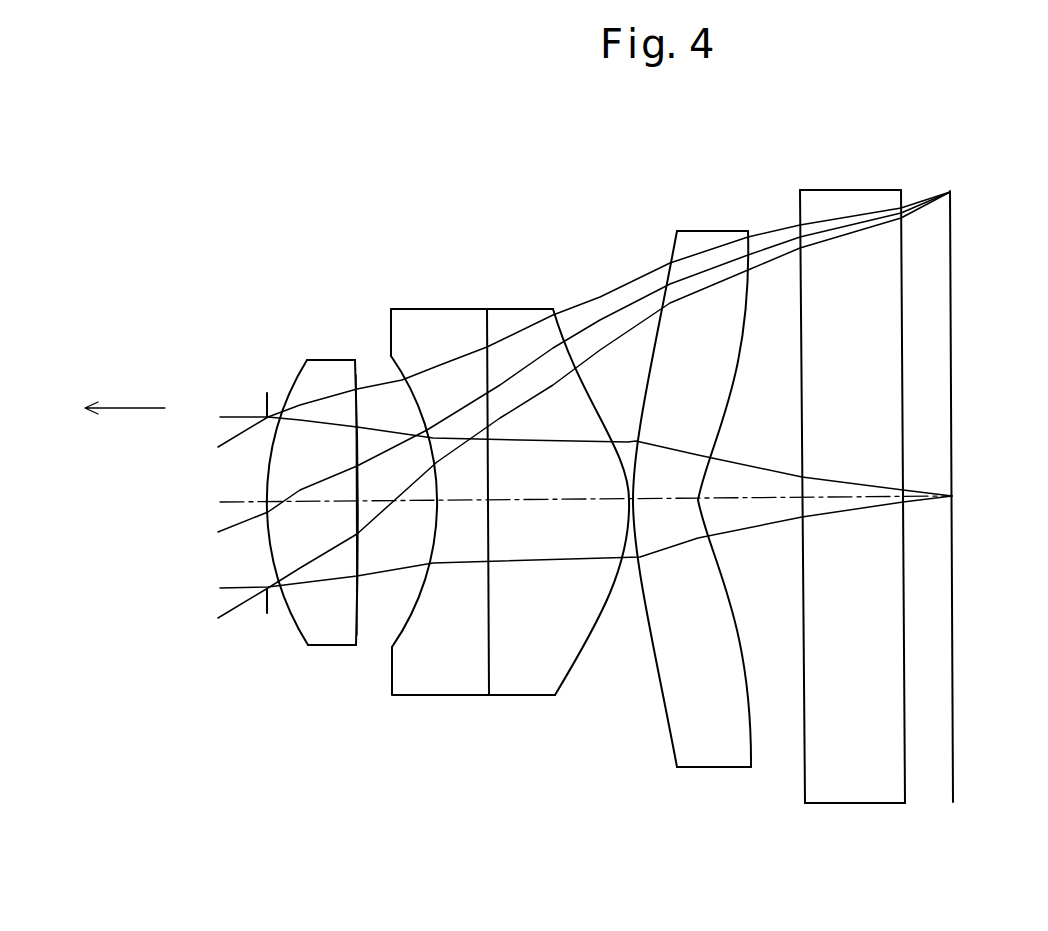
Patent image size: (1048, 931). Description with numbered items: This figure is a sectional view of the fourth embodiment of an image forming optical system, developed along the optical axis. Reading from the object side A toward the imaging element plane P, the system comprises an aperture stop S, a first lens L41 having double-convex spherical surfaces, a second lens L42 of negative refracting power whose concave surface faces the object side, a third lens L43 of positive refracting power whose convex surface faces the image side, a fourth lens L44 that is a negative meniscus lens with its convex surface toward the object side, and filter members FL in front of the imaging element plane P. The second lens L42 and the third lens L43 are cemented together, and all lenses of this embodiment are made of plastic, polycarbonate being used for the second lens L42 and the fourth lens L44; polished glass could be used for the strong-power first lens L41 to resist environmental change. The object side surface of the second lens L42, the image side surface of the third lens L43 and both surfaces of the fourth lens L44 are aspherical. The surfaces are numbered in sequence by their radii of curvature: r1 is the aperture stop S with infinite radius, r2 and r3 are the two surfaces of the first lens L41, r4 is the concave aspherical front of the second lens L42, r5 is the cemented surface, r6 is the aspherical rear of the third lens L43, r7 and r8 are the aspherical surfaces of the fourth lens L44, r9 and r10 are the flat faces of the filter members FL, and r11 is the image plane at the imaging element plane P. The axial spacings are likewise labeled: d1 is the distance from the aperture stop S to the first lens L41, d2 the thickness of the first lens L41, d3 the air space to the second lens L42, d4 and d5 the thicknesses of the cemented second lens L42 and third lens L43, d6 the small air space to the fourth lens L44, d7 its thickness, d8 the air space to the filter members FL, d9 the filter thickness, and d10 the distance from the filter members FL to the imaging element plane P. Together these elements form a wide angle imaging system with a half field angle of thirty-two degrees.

The object side A is at (125, 393).
The aperture stop S is at (268, 613).
The first lens L41 is at (294, 545).
The second lens L42 is at (427, 540).
The third lens L43 is at (558, 541).
The fourth lens L44 is at (694, 502).
The filter members FL is at (850, 511).
The imaging element plane P is at (980, 494).
The radius of curvature of the first surface r1 is at (266, 393).
The radius of curvature of the second surface r2 is at (308, 359).
The radius of curvature of the third surface r3 is at (361, 383).
The radius of curvature of the fourth surface r4 is at (391, 355).
The radius of curvature of the fifth surface r5 is at (484, 337).
The radius of curvature of the sixth surface r6 is at (558, 337).
The radius of curvature of the seventh surface r7 is at (653, 365).
The radius of curvature of the eighth surface r8 is at (745, 343).
The radius of curvature of the ninth surface r9 is at (800, 210).
The radius of curvature of the tenth surface r10 is at (902, 200).
The radius of curvature of the eleventh surface r11 is at (945, 207).
The distance from aperture stop to first lens d1 is at (245, 507).
The thickness of the first lens d2 is at (333, 505).
The air space between first and second lenses d3 is at (399, 503).
The thickness of the second lens d4 is at (460, 502).
The thickness of the third lens d5 is at (560, 503).
The air space between third and fourth lenses d6 is at (628, 504).
The thickness of the fourth lens d7 is at (652, 500).
The air space between fourth lens and filter members d8 is at (752, 498).
The thickness of the filter members d9 is at (863, 498).
The distance from filter members to image plane d10 is at (934, 498).